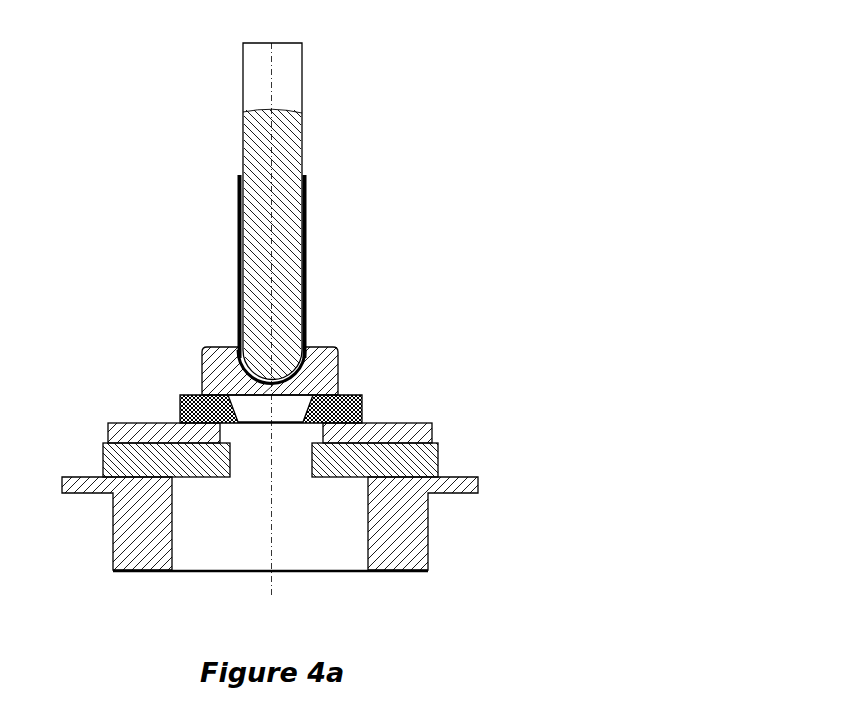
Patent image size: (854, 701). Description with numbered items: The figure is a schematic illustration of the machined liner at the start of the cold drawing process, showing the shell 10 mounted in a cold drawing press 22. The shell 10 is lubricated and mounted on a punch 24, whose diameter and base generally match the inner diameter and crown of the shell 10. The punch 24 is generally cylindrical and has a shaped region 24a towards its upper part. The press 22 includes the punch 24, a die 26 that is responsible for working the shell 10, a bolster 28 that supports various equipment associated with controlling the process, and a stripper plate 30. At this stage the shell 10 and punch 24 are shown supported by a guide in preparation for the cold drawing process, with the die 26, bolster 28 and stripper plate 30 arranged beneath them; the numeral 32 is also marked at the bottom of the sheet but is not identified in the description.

The shell 10 is at (339, 252).
The cold drawing press 22 is at (429, 112).
The punch 24 is at (303, 90).
The shaped region 24a is at (308, 183).
The die 26 is at (353, 403).
The bolster 28 is at (428, 423).
The stripper plate 30 is at (430, 462).
The housing 32 is at (324, 589).